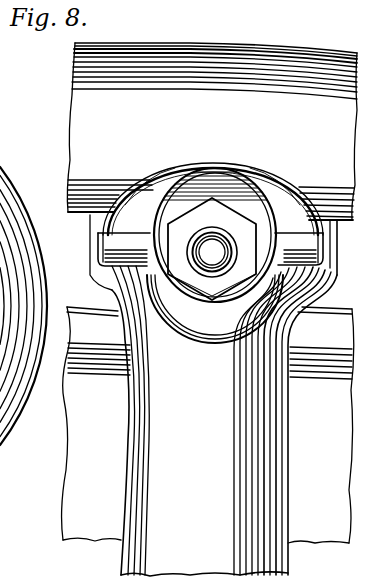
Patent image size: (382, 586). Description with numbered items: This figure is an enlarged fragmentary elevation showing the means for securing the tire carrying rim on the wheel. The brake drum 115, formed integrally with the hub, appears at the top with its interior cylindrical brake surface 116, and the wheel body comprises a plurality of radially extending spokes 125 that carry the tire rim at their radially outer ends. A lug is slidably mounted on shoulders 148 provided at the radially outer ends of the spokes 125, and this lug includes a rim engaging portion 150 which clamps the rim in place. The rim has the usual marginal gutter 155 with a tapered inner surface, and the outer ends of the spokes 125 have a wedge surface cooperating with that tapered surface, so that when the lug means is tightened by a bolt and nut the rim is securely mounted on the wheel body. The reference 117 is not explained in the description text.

The brake drum 115 is at (212, 47).
The interior cylindrical brake surface 116 is at (168, 176).
The right portion of bracket ring 117 is at (270, 186).
The rim engaging portion 150 is at (210, 168).
The marginal gutter 155 is at (80, 163).
The shoulders 148 is at (110, 265).
The spokes 125 is at (289, 565).